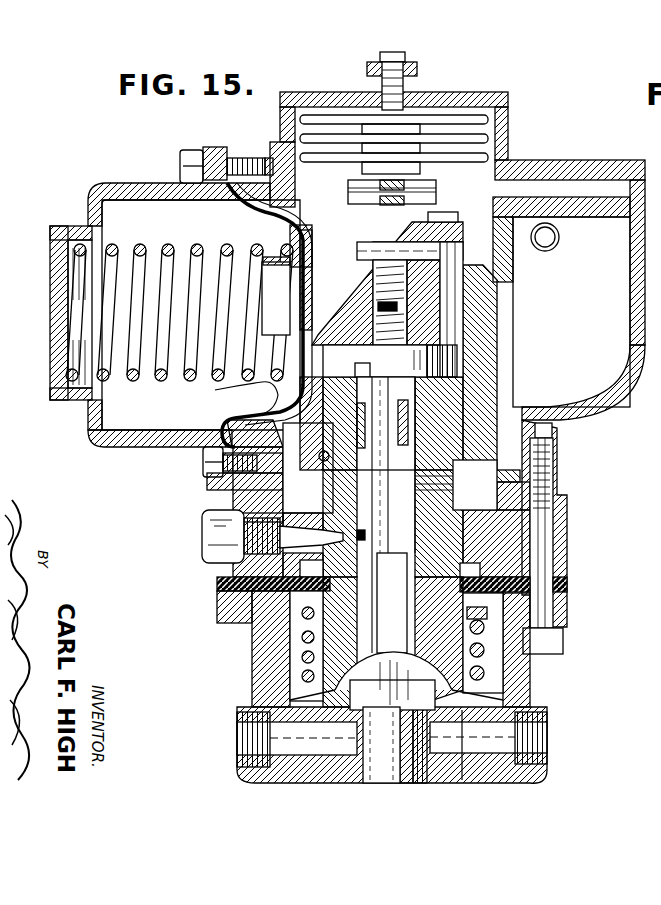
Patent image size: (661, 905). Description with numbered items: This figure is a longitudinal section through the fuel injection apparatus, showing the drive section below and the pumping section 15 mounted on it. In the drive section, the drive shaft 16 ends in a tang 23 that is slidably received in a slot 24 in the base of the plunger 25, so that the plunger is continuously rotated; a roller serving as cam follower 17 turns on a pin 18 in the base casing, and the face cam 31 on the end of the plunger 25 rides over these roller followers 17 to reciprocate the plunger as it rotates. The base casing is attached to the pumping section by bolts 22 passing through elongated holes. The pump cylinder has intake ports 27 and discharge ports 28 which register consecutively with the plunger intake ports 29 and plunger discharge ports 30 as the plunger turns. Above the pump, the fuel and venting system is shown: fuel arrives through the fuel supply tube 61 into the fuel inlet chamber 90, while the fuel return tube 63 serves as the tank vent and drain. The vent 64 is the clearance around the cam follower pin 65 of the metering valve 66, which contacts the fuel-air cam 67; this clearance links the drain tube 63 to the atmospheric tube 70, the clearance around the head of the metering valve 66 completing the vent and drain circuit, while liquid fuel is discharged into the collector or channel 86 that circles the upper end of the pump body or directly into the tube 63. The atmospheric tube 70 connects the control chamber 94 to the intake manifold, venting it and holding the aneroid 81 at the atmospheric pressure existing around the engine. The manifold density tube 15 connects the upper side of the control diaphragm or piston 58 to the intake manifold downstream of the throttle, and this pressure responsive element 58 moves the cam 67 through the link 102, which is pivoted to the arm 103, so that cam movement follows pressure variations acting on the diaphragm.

The manifold density tube 15 is at (55, 308).
The drive shaft 16 is at (390, 760).
The cam follower 17 is at (500, 705).
The pin 18 is at (500, 740).
The bolts 22 is at (554, 552).
The tang 23 is at (420, 690).
The slot 24 is at (483, 660).
The plunger 25 is at (415, 523).
The intake ports 27 is at (447, 480).
The discharge ports 28 is at (310, 533).
The plunger intake ports 29 is at (447, 496).
The plunger discharge ports 30 is at (327, 522).
The face cam 31 is at (462, 772).
The control diaphragm or piston 58 is at (220, 405).
The fuel supply tube 61 is at (560, 240).
The fuel return tube 63 is at (650, 452).
The fuel vent 64 is at (466, 284).
The cam follower pin 65 is at (447, 305).
The metering valve 66 is at (455, 356).
The fuel-air cam 67 is at (430, 258).
The atmospheric tube 70 is at (300, 215).
The aneroid 81 is at (455, 118).
The collector or channel 86 is at (452, 385).
The fuel inlet chamber 90 is at (571, 312).
The control chamber 94 is at (481, 181).
The link 102 is at (348, 270).
The arm 103 is at (432, 240).